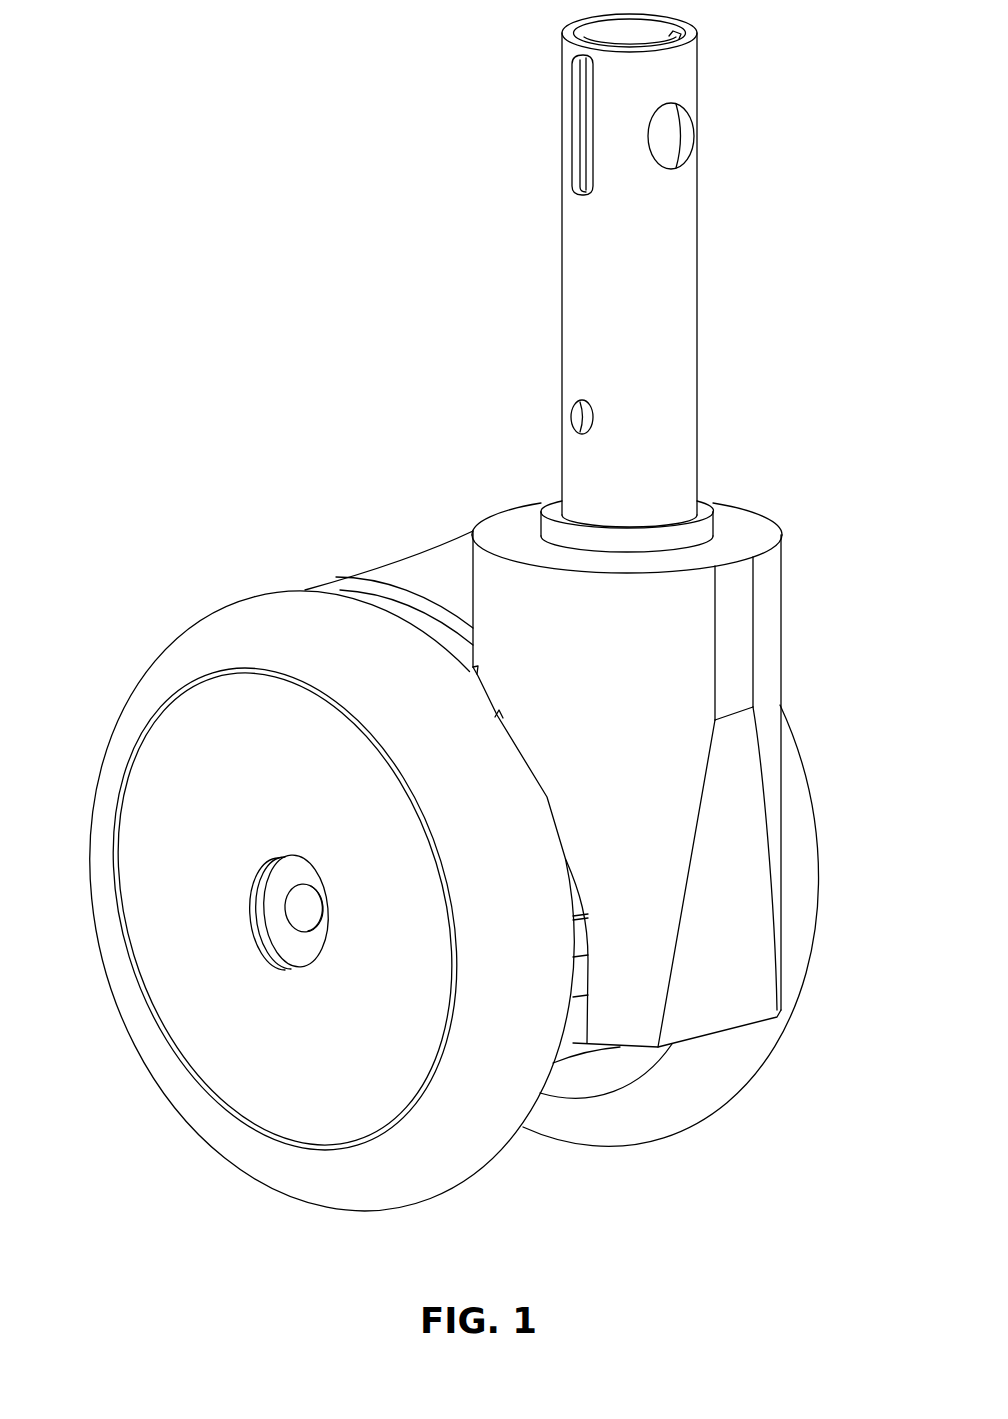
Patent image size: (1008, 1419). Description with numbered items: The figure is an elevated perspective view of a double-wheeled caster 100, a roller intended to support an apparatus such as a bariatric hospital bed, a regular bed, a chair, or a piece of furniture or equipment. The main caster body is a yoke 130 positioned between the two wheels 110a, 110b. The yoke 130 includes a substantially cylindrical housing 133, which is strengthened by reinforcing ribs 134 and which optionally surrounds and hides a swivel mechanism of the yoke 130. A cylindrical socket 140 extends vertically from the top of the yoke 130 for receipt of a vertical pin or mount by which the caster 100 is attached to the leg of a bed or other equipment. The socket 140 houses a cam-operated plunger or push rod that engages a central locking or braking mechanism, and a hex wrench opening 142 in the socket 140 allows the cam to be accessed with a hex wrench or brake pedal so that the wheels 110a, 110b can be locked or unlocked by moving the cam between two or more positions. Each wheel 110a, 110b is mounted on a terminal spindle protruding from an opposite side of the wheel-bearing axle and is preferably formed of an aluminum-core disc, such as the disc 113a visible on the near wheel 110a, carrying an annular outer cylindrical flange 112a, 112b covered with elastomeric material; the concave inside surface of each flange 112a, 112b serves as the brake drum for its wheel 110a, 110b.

The caster 100 is at (228, 229).
The wheel 110a is at (215, 841).
The wheel 110b is at (718, 1098).
The annular outer cylindrical flange 112a is at (230, 628).
The annular outer cylindrical flange 112b is at (727, 1050).
The aluminum-core disc 113a is at (162, 982).
The yoke 130 is at (653, 741).
The cylindrical housing 133 is at (781, 583).
The reinforcing ribs 134 is at (747, 804).
The cylindrical socket 140 is at (697, 303).
The hex wrench opening 142 is at (690, 110).